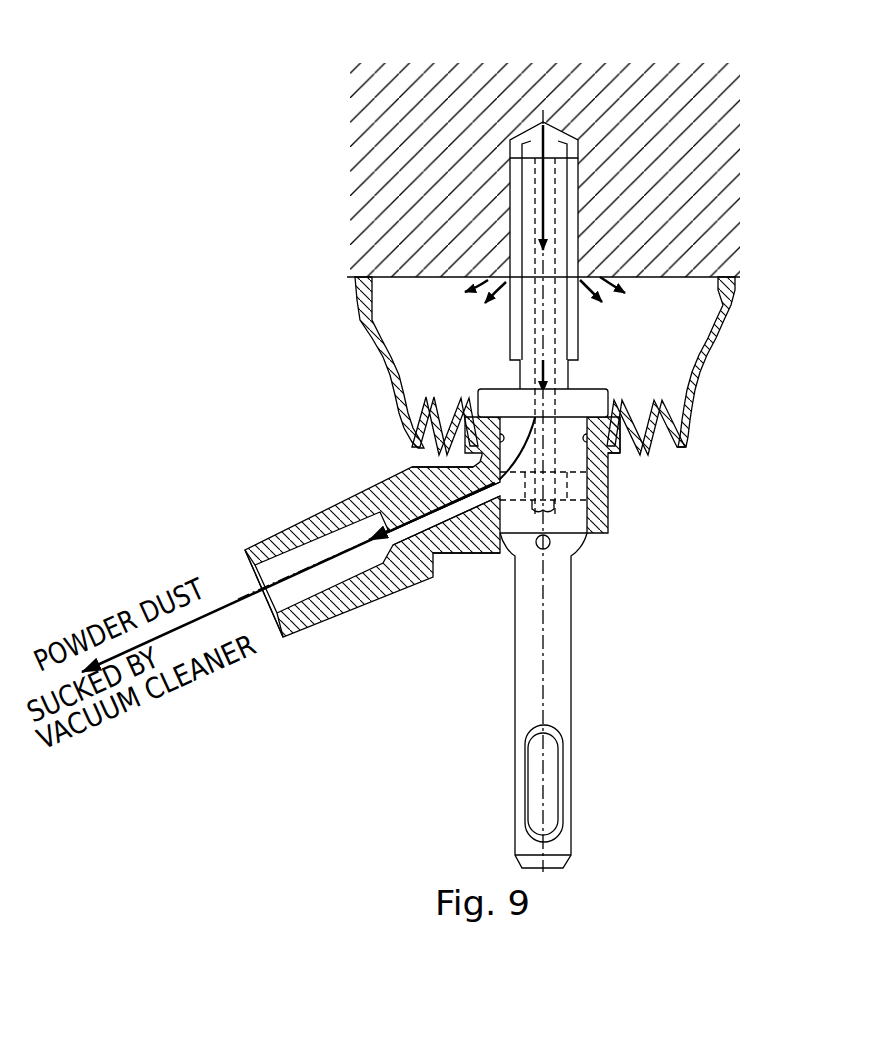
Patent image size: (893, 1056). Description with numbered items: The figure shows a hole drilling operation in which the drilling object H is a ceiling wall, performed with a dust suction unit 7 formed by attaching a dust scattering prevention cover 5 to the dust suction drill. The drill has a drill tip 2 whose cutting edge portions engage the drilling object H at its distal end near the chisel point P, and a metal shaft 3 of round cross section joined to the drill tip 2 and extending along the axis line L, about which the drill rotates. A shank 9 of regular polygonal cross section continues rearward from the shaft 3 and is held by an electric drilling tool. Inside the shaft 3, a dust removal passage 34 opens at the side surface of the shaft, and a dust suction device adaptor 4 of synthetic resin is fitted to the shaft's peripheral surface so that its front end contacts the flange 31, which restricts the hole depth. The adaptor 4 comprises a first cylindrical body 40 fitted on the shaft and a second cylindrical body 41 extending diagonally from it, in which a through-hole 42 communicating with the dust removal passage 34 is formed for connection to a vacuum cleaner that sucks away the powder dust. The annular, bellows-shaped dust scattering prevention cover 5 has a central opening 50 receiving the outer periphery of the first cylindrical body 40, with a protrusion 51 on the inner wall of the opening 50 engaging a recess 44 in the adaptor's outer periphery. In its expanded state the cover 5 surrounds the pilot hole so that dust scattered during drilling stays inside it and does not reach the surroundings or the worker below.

The drilling object H is at (728, 245).
The chisel point P is at (545, 120).
The drill tip 2 is at (556, 146).
The shaft 3 is at (580, 335).
The flange 31 is at (592, 400).
The dust removal passage 34 is at (518, 485).
The dust suction device adaptor 4 is at (478, 698).
The first cylindrical body 40 is at (597, 533).
The second cylindrical body 41 is at (383, 597).
The through-hole 42 is at (250, 577).
The recess 44 is at (468, 430).
The dust scattering prevention cover 5 is at (693, 392).
The opening 50 is at (658, 440).
The protrusion 51 is at (623, 437).
The shank 9 is at (558, 647).
The axis line L is at (543, 710).
The dust suction unit 7 is at (296, 709).